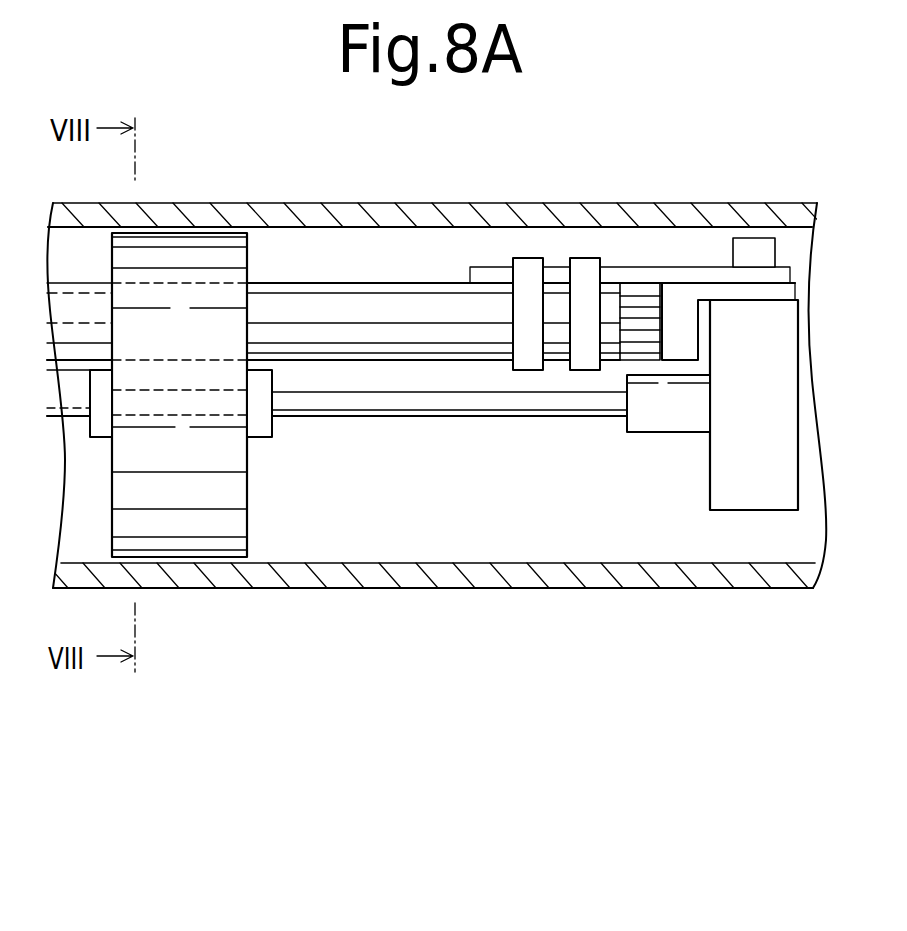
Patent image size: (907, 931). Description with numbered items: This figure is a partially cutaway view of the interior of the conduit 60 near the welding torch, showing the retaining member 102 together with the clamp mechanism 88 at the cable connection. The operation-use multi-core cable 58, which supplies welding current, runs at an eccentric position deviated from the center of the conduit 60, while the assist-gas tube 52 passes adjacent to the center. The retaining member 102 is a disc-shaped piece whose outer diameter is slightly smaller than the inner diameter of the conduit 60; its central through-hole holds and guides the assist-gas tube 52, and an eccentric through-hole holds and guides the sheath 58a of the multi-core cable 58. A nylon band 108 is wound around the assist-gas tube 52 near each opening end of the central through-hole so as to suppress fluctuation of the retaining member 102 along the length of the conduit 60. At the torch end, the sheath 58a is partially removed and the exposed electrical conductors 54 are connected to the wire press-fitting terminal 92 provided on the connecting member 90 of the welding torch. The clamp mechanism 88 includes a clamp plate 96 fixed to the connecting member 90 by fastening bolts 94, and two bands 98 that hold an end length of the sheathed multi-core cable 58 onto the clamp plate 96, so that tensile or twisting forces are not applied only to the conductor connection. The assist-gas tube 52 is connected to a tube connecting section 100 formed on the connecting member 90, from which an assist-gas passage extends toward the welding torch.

The assist-gas tube 52 is at (395, 402).
The electrical conductors 54 is at (635, 337).
The operation-use multi-core cable 58 is at (392, 297).
The sheath 58a is at (289, 295).
The conduit 60 is at (433, 572).
The clamp mechanism 88 is at (671, 254).
The connecting member 90 is at (772, 468).
The wire press-fitting terminal 92 is at (680, 337).
The fastening bolts 94 is at (760, 255).
The clamp plate 96 is at (702, 273).
The bands 98 is at (585, 273).
The tube connecting section 100 is at (670, 413).
The retaining member 102 is at (215, 528).
The nylon band 108 is at (100, 425).